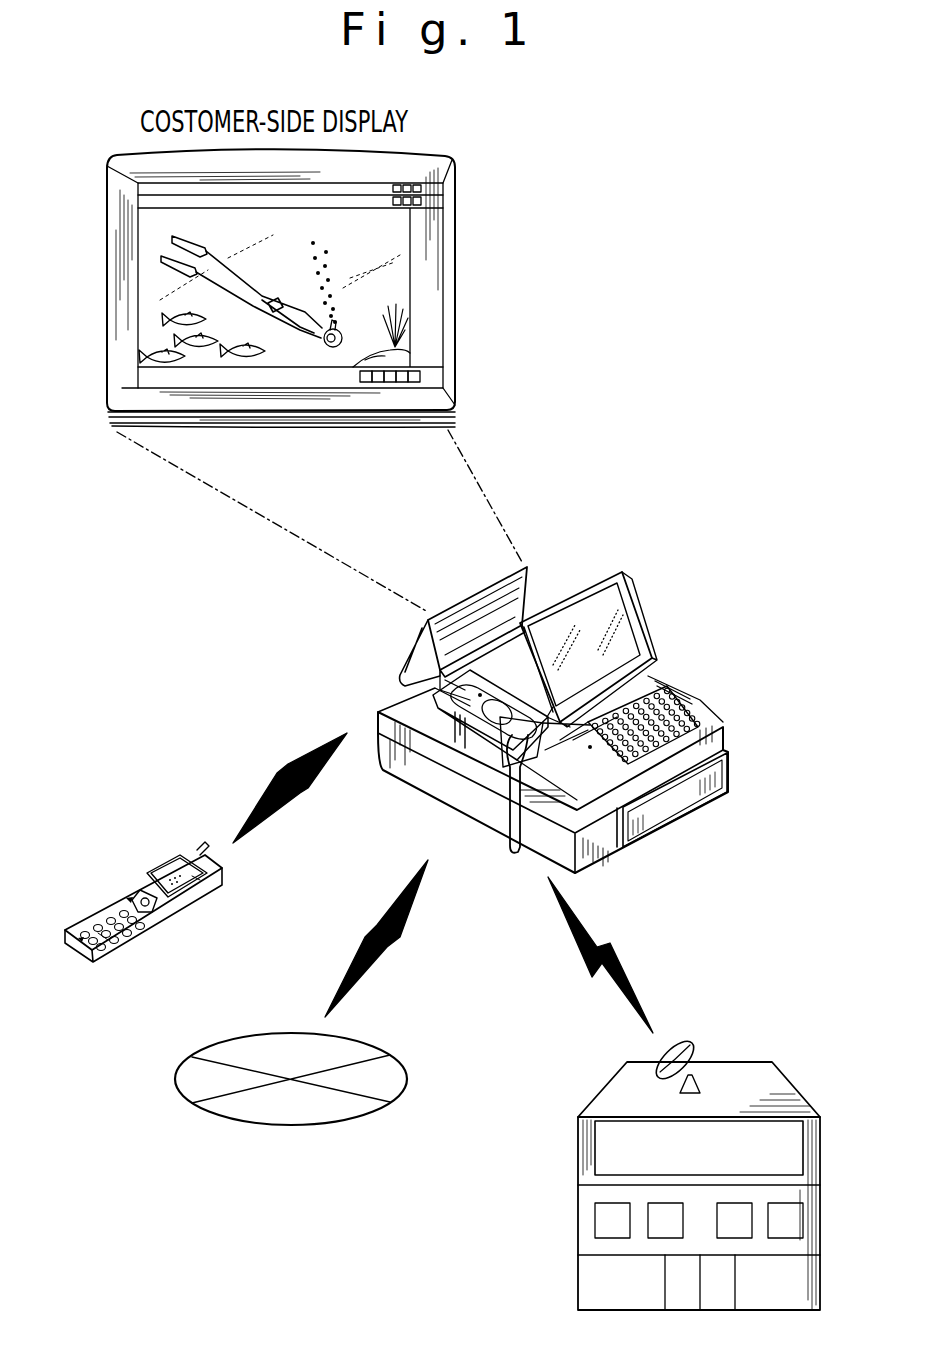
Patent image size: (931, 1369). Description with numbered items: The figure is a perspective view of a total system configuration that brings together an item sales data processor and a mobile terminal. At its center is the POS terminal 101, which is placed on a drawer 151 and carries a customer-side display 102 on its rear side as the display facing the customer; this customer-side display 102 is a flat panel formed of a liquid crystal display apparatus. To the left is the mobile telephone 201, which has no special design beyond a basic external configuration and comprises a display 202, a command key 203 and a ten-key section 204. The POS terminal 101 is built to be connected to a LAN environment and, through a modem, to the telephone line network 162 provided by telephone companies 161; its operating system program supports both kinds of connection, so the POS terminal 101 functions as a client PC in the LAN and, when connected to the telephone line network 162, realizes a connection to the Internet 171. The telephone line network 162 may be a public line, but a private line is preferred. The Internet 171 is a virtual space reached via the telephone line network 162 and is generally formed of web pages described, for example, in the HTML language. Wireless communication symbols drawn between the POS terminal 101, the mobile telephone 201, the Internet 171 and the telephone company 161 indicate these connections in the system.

The POS terminal 101 is at (554, 673).
The customer-side display 102 is at (315, 375).
The drawer 151 is at (672, 806).
The telephone company 161 is at (578, 1182).
The telephone line network 162 is at (415, 890).
The Internet 171 is at (307, 1127).
The mobile telephone 201 is at (177, 855).
The display 202 is at (183, 866).
The command key 203 is at (138, 893).
The ten-key section 204 is at (95, 905).